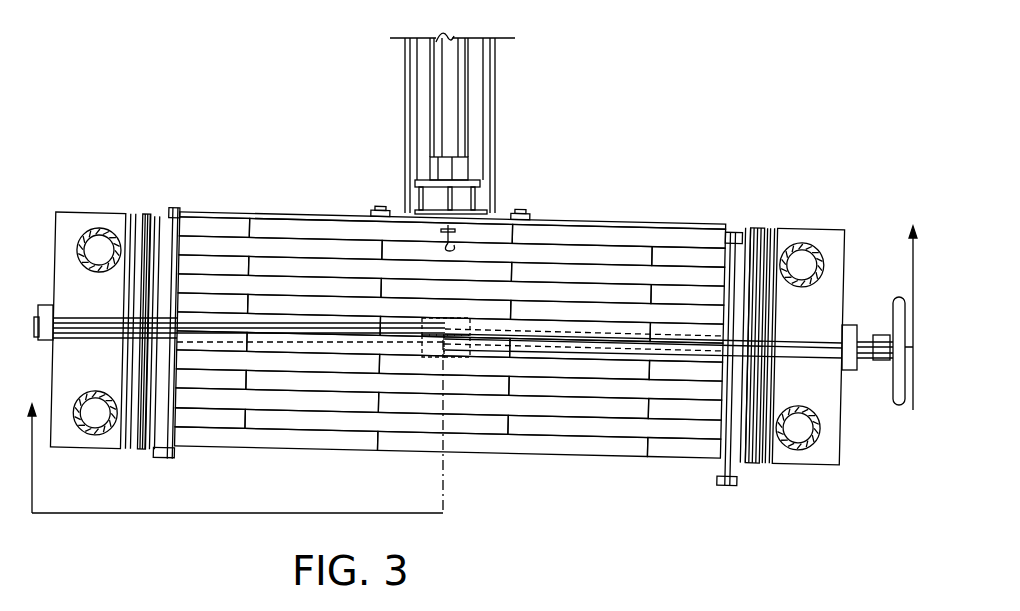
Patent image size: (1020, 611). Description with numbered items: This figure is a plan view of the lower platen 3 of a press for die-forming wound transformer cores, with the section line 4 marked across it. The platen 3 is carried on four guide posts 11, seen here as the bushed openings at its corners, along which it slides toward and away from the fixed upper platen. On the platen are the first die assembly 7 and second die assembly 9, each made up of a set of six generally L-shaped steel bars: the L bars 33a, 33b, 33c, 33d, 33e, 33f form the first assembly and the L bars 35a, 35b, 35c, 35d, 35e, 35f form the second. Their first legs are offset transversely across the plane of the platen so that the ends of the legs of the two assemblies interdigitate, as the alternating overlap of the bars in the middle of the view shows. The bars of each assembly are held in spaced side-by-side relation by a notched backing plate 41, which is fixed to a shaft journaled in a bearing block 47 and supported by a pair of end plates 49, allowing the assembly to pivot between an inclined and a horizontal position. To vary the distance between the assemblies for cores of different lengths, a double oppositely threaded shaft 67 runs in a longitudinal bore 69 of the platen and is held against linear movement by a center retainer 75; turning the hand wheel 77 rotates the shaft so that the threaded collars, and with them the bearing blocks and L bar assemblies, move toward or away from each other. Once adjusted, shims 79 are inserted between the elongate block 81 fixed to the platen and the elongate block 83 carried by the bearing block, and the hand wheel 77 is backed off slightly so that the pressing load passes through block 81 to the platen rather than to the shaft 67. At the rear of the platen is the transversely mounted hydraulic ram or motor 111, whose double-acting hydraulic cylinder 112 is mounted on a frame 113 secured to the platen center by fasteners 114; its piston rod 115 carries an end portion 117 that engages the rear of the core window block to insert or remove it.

The lower platen 3 is at (70, 213).
The section line 4- 4 is at (472, 360).
The first die assembly 7 is at (442, 302).
The second die assembly 9 is at (551, 312).
The guide posts 11 is at (98, 248).
The L bar 33a is at (311, 428).
The L bar 33b is at (306, 388).
The L bar 33c is at (305, 352).
The L bar 33d is at (363, 310).
The L bar 33e is at (305, 274).
The L bar 33f is at (303, 238).
The L bar 35a is at (565, 418).
The L bar 35b is at (630, 415).
The L bar 35c is at (643, 380).
The L bar 35d is at (597, 334).
The L bar 35e is at (595, 295).
The L bar 35f is at (598, 255).
The backing plate 41 is at (193, 246).
The bearing block 47 is at (163, 291).
The end plates 49 is at (174, 208).
The double oppositely threaded shaft 67 is at (457, 320).
The longitudinal bore 69 is at (490, 325).
The center retainer 75 is at (425, 318).
The hand wheel 77 is at (899, 300).
The shims 79 is at (143, 217).
The elongate block 81 is at (135, 213).
The elongate block 83 is at (760, 192).
The hydraulic ram or motor 111 is at (446, 123).
The double-acting hydraulic cylinder 112 is at (440, 82).
The frame 113 is at (496, 146).
The fasteners 114 is at (520, 212).
The piston rod 115 is at (481, 193).
The end portion 117 is at (455, 247).